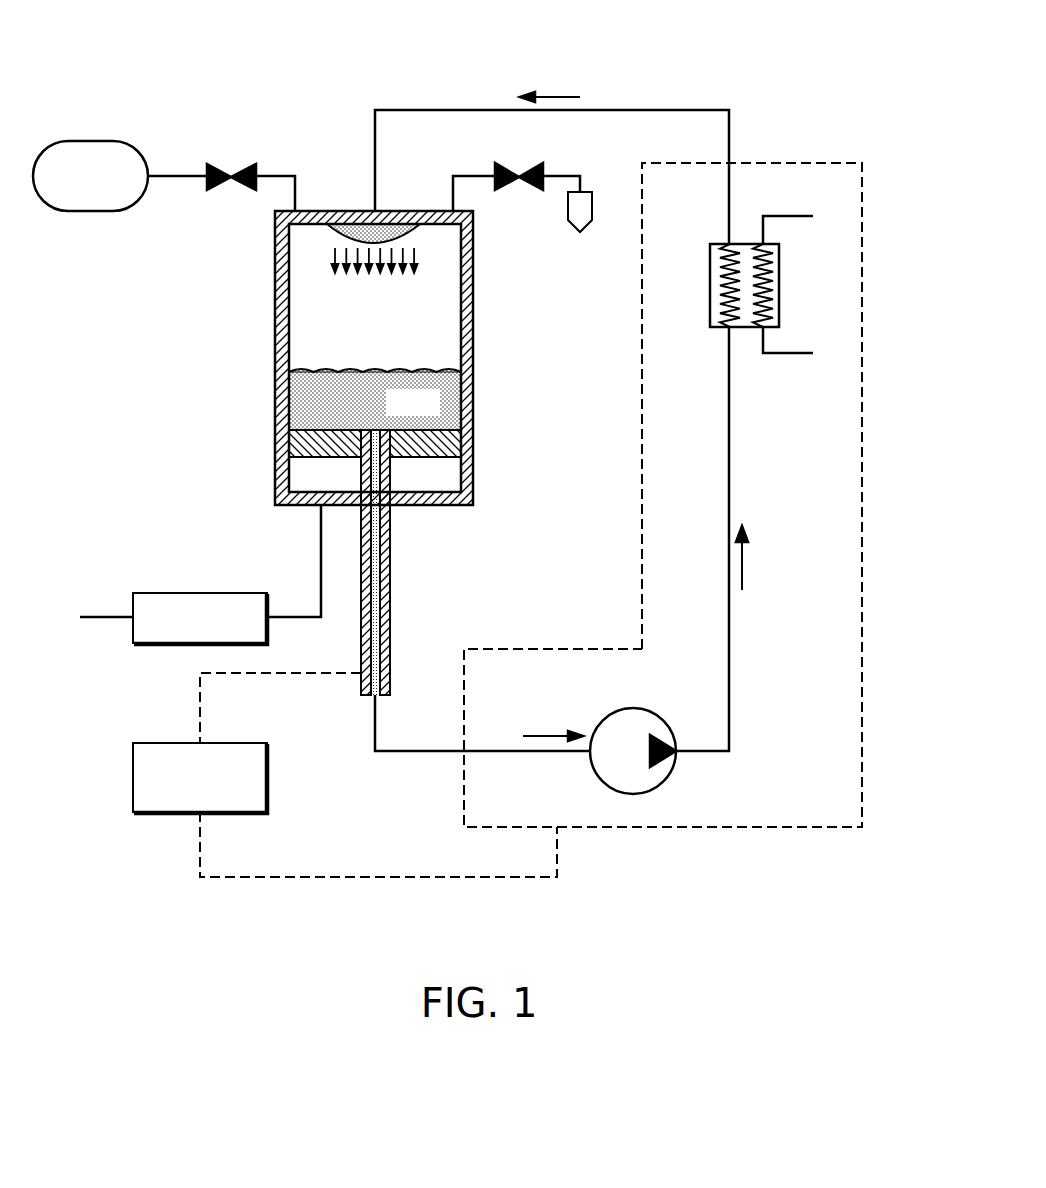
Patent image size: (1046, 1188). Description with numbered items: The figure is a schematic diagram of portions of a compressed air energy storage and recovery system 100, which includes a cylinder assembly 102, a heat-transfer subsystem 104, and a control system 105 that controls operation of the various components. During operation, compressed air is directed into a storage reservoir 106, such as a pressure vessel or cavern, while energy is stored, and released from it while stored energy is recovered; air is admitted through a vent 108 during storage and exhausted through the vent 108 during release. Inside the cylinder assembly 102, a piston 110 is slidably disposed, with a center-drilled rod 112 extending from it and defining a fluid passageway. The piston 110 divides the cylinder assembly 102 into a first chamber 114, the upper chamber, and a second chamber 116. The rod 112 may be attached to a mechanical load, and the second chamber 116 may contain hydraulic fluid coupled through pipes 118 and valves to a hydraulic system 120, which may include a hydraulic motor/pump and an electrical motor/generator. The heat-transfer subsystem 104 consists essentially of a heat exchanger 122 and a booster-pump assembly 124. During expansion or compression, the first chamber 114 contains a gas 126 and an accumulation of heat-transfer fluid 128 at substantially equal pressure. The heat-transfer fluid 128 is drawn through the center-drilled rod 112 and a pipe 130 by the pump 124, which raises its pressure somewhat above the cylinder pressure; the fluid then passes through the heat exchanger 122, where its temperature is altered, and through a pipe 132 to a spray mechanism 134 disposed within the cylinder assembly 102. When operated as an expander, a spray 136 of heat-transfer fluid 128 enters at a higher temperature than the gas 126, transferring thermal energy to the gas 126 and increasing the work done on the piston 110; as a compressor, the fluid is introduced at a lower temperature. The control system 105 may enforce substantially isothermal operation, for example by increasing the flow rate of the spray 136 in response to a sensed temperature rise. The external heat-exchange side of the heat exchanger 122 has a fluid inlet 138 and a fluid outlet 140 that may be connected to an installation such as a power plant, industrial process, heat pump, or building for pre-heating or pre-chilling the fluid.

The compressed air energy storage and recovery system 100 is at (205, 52).
The cylinder assembly 102 is at (275, 296).
The heat-transfer subsystem 104 is at (636, 398).
The control system 105 is at (267, 777).
The storage reservoir 106 is at (164, 176).
The vent 108 is at (584, 233).
The piston 110 is at (298, 437).
The center-drilled rod 112 is at (391, 578).
The first chamber 114 is at (450, 312).
The second chamber 116 is at (450, 472).
The pipes 118 is at (318, 542).
The hydraulic system 120 is at (173, 618).
The heat exchanger 122 is at (779, 278).
The booster-pump assembly 124 is at (632, 707).
The gas 126 is at (373, 325).
The heat-transfer fluid 128 is at (375, 399).
The pipe 130 is at (420, 752).
The pipe 132 is at (660, 110).
The spray mechanism 134 is at (358, 235).
The spray 136 is at (420, 255).
The fluid inlet 138 is at (797, 216).
The fluid outlet 140 is at (795, 353).